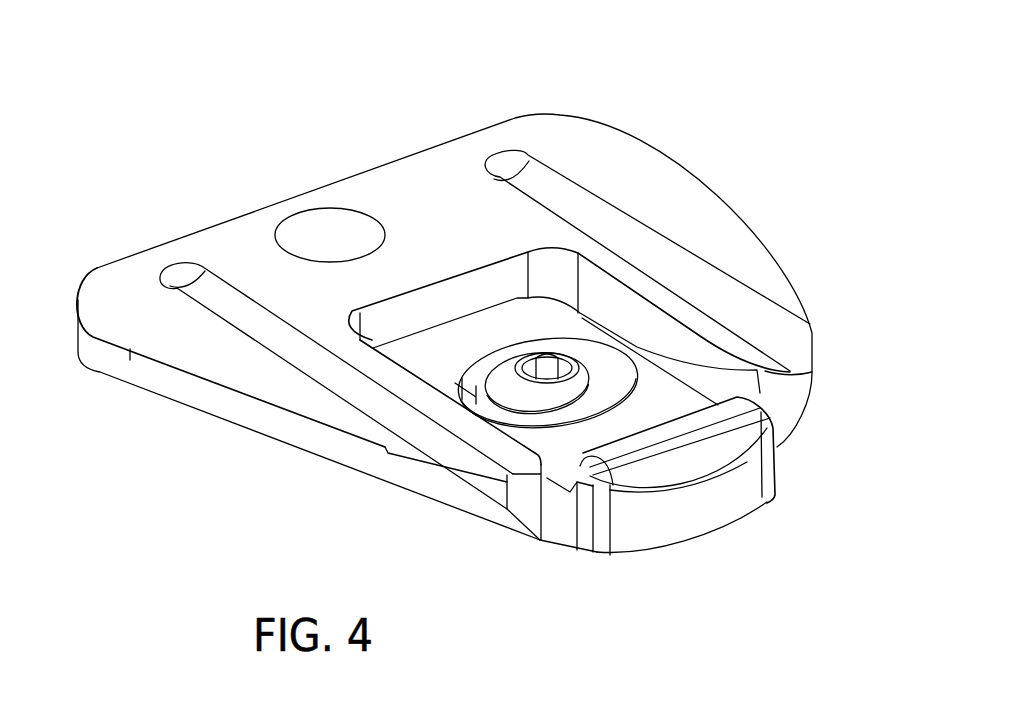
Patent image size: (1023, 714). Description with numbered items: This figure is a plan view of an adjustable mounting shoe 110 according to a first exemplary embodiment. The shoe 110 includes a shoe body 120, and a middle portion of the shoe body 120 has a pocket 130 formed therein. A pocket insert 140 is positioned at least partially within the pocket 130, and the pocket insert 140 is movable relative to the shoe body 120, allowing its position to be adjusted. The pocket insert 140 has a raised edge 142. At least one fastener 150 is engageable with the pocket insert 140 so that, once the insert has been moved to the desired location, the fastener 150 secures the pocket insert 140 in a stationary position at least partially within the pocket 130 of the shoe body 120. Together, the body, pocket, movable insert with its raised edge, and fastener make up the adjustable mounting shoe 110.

The adjustable mounting shoe 110 is at (342, 85).
The shoe body 120 is at (668, 149).
The pocket 130 is at (657, 327).
The pocket insert 140 is at (560, 471).
The raised edge 142 is at (700, 507).
The fastener 150 is at (580, 386).